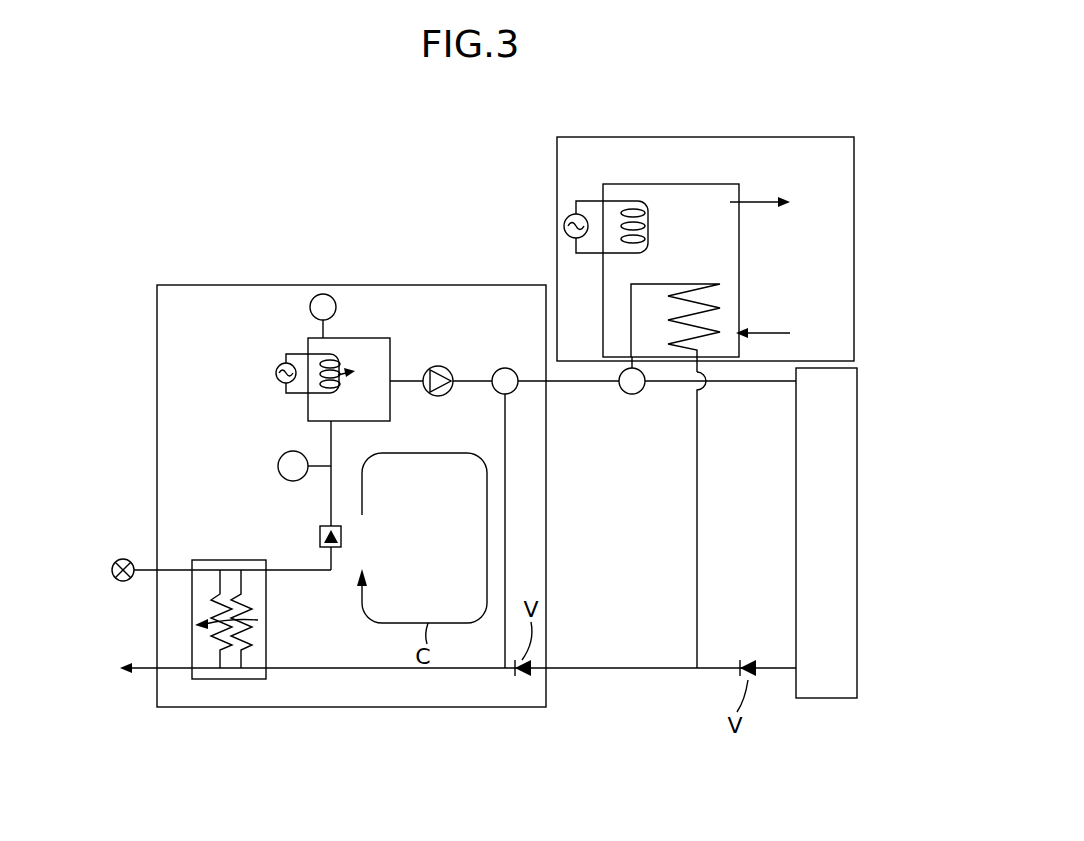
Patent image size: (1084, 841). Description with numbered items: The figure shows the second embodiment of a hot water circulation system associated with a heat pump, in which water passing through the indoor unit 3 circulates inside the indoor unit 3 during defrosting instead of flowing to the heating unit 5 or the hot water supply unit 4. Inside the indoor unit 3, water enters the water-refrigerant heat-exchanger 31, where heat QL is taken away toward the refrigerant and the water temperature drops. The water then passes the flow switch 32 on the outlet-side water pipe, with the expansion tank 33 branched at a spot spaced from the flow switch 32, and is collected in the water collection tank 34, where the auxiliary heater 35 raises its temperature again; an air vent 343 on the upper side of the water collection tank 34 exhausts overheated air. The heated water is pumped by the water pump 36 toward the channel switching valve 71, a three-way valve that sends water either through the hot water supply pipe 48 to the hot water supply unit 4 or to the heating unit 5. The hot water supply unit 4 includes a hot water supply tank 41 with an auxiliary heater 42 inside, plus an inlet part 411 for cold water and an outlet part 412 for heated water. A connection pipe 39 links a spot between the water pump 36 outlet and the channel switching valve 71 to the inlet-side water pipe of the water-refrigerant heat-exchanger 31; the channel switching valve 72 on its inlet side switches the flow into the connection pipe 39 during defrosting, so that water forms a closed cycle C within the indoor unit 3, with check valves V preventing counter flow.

The indoor unit 3 is at (272, 284).
The water-refrigerant heat-exchanger 31 is at (233, 559).
The flow switch 32 is at (319, 538).
The expansion tank 33 is at (283, 455).
The water collection tank 34 is at (356, 338).
The auxiliary heater 35 is at (290, 356).
The air vent 343 is at (323, 293).
The water pump 36 is at (441, 366).
The connection pipe 39 is at (505, 495).
The hot water supply unit 4 is at (857, 255).
The hot water supply tank 41 is at (678, 184).
The inlet part 411 is at (735, 328).
The outlet part 412 is at (784, 202).
The auxiliary heater 42 is at (590, 201).
The hot water supply pipe 48 is at (697, 525).
The heating unit 5 is at (857, 532).
The channel switching valve 71 is at (632, 395).
The channel switching valve 72 is at (505, 368).